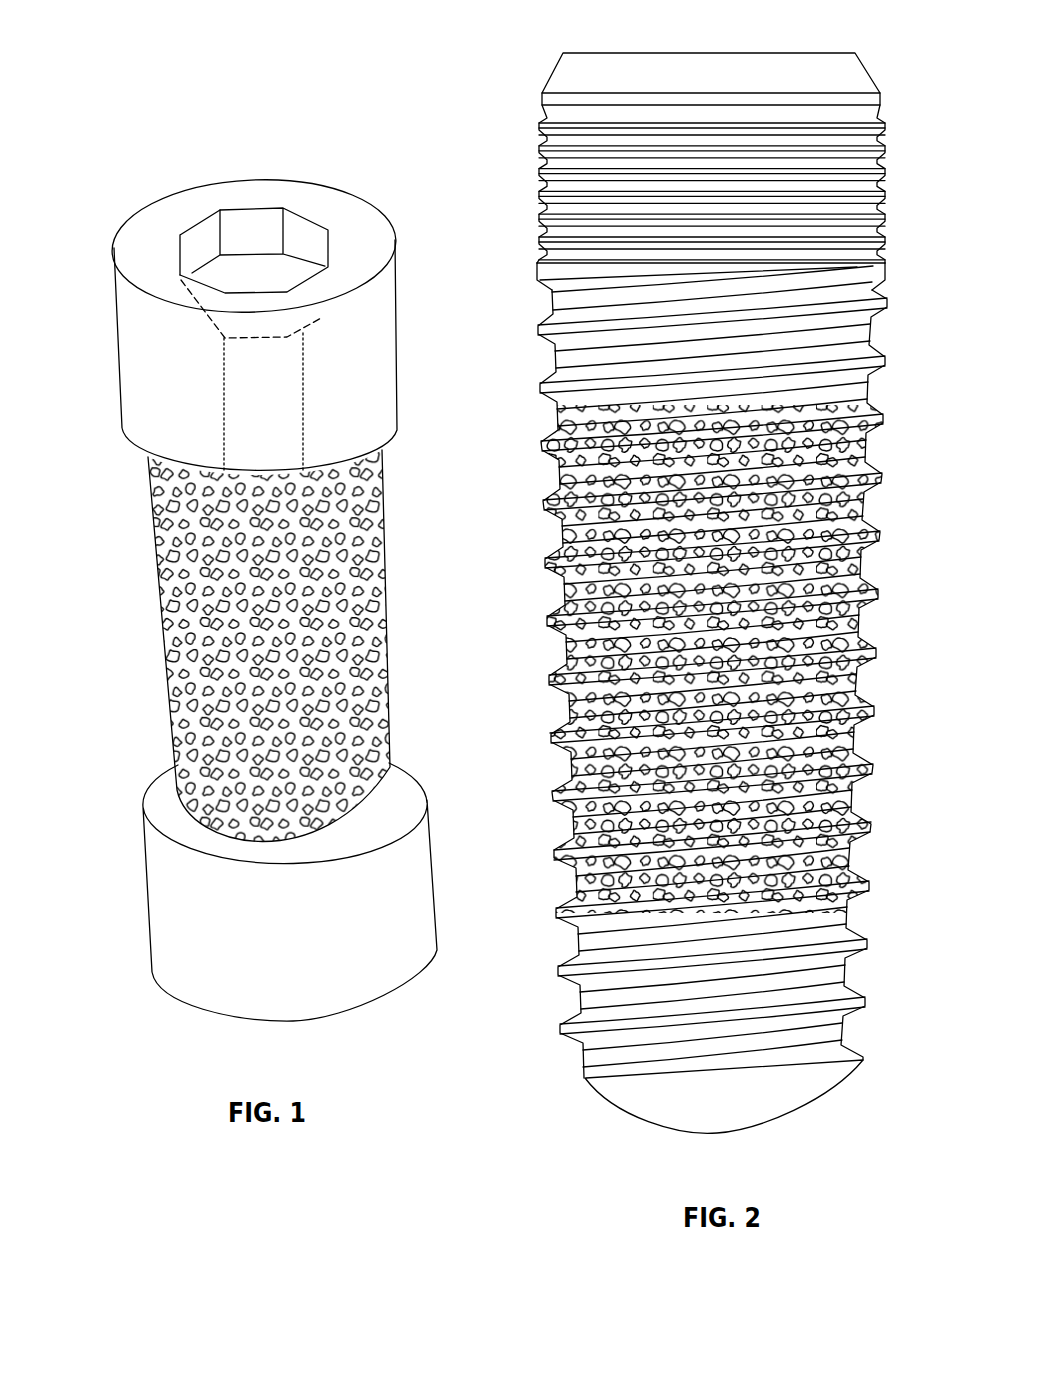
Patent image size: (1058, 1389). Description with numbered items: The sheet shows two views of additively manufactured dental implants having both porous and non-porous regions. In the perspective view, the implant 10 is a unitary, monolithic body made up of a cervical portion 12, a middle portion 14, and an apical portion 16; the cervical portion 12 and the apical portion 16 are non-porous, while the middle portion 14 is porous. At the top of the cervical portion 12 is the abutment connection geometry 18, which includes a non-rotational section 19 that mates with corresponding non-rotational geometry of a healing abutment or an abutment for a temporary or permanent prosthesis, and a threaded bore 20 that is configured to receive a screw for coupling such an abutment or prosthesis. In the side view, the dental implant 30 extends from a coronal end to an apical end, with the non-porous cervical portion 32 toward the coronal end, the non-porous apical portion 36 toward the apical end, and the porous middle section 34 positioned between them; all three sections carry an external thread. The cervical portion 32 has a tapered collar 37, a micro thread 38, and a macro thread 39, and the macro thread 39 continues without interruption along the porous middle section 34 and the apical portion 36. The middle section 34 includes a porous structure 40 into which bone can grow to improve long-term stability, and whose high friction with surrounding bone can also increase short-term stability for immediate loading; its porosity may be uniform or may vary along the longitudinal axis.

In FIG. 1, the implant 10 is at (107, 104).
In FIG. 1, the cervical portion 12 is at (404, 320).
In FIG. 1, the middle portion 14 is at (387, 608).
In FIG. 1, the apical portion 16 is at (437, 866).
In FIG. 1, the abutment connection geometry 18 is at (306, 243).
In FIG. 1, the non-rotational section 19 is at (198, 252).
In FIG. 1, the threaded bore 20 is at (218, 407).
In FIG. 2, the dental implant 30 is at (513, 46).
In FIG. 2, the non-porous cervical portion 32 is at (887, 177).
In FIG. 2, the porous middle section 34 is at (888, 593).
In FIG. 2, the non-porous apical portion 36 is at (864, 979).
In FIG. 2, the tapered collar 37 is at (866, 77).
In FIG. 2, the micro thread 38 is at (884, 152).
In FIG. 2, the macro thread 39 is at (884, 366).
In FIG. 2, the porous structure 40 is at (857, 737).